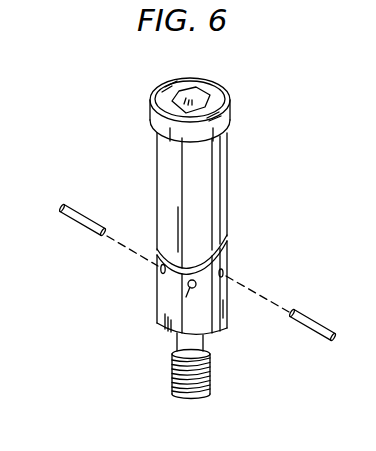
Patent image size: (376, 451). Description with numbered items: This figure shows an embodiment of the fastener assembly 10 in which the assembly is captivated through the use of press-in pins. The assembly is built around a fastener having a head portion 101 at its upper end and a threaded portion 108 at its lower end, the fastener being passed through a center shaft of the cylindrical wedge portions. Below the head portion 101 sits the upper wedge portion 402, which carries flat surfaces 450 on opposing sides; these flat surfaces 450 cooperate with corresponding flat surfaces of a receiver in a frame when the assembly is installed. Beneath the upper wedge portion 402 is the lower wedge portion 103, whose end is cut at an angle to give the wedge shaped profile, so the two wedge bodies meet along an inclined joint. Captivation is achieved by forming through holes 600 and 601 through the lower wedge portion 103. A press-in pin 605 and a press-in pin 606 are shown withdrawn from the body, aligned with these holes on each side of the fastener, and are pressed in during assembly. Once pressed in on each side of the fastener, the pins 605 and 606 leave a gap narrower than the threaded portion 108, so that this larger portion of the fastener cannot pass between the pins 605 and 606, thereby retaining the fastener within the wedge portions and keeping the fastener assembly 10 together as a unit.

The fastener assembly 10 is at (132, 88).
The head portion 101 is at (232, 112).
The flat surfaces 450 is at (157, 172).
The upper wedge portion 402 is at (228, 170).
The lower wedge portion 103 is at (228, 262).
The through hole 601 is at (161, 272).
The through hole 600 is at (190, 289).
The press-in pin 605 is at (72, 220).
The press-in pin 606 is at (313, 316).
The threaded portion 108 is at (210, 378).